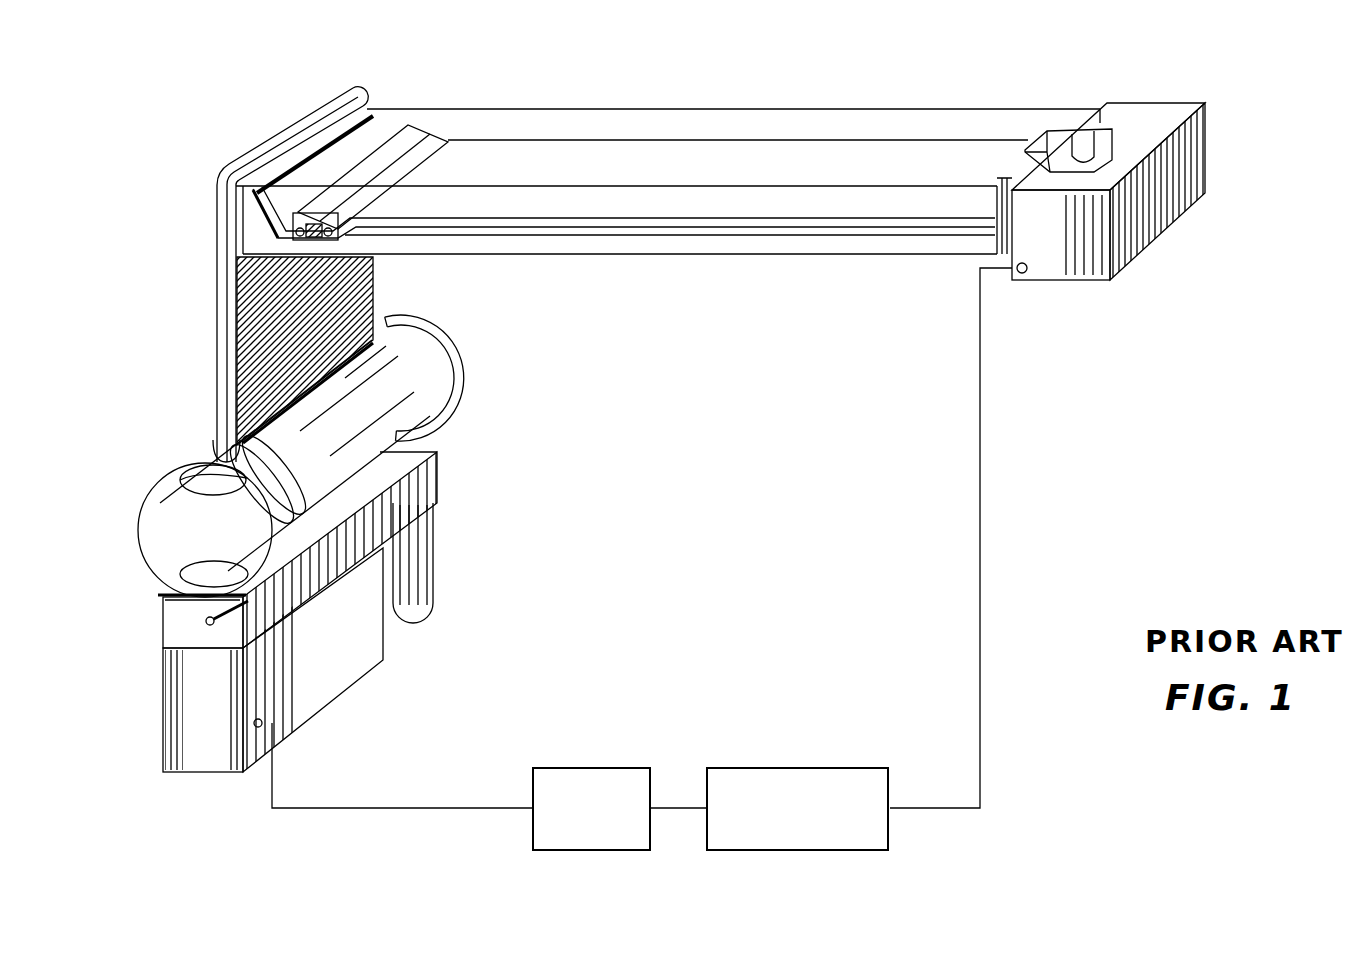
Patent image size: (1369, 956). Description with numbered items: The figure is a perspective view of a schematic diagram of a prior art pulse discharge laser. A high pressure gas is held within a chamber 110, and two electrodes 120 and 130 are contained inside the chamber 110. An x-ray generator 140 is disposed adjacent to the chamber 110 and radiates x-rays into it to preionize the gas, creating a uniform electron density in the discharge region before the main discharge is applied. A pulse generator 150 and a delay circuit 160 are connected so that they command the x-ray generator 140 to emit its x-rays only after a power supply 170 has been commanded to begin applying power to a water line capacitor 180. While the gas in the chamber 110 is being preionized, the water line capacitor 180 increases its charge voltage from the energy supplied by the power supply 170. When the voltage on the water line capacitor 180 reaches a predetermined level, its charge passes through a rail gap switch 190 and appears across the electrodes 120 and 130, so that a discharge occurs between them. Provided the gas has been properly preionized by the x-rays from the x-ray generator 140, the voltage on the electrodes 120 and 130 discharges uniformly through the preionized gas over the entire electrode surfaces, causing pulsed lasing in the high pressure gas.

The chamber 110 is at (140, 518).
The electrode 120 is at (190, 474).
The electrode 130 is at (158, 600).
The x-ray generator 140 is at (173, 673).
The pulse generator 150 is at (783, 768).
The delay circuit 160 is at (605, 768).
The power supply 170 is at (1207, 150).
The water line capacitor 180 is at (822, 140).
The rail gap switch 190 is at (418, 124).